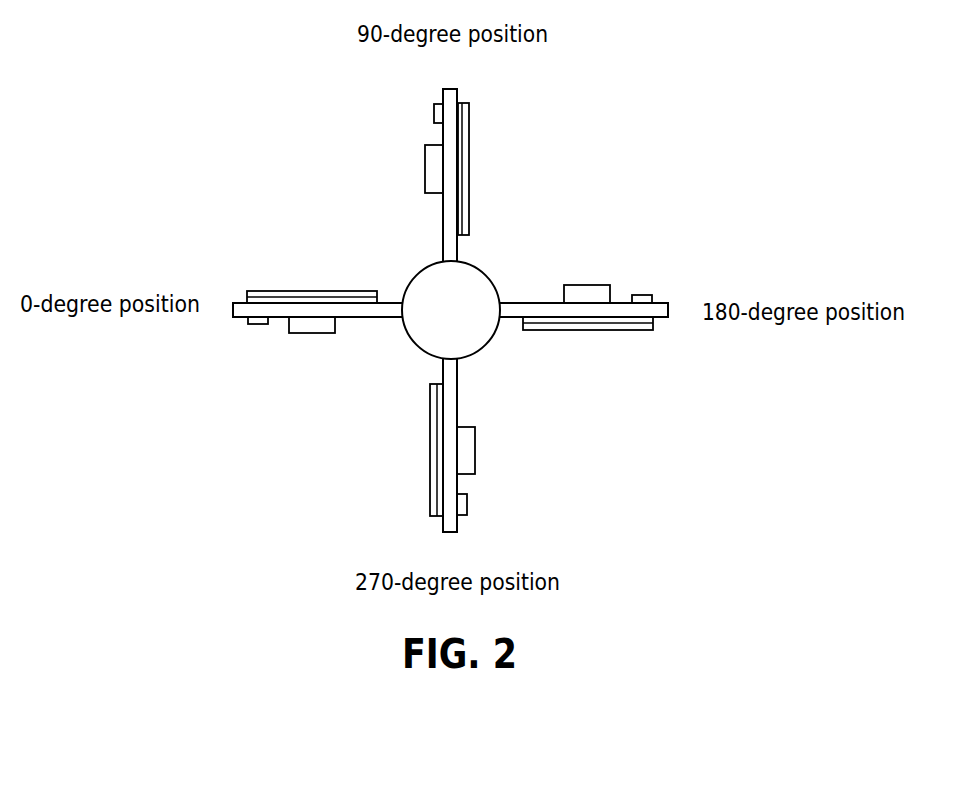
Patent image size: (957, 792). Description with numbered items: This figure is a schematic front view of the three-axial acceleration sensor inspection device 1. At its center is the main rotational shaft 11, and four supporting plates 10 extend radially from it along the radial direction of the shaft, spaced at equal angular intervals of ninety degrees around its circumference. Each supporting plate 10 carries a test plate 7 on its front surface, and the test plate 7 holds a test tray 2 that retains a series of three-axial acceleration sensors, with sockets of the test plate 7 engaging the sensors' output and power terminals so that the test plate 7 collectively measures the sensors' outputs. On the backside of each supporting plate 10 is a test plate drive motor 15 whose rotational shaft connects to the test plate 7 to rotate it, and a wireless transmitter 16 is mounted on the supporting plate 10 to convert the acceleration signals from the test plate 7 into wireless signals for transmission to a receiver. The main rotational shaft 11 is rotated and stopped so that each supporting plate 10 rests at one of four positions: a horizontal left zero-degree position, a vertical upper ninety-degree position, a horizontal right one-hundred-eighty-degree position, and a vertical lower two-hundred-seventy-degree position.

The three-axial acceleration sensor inspection device 1 is at (595, 153).
The test tray 2 is at (470, 145).
The test plate 7 is at (461, 104).
The supporting plate 10 is at (448, 102).
The main rotational shaft 11 is at (486, 263).
The test plate drive motor 15 is at (434, 168).
The wireless transmitter 16 is at (434, 112).